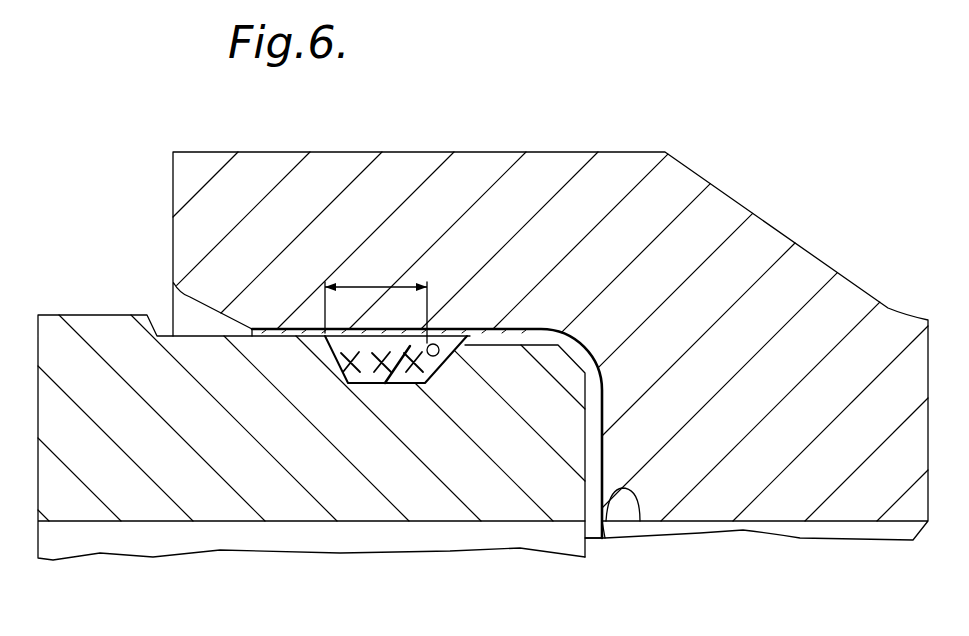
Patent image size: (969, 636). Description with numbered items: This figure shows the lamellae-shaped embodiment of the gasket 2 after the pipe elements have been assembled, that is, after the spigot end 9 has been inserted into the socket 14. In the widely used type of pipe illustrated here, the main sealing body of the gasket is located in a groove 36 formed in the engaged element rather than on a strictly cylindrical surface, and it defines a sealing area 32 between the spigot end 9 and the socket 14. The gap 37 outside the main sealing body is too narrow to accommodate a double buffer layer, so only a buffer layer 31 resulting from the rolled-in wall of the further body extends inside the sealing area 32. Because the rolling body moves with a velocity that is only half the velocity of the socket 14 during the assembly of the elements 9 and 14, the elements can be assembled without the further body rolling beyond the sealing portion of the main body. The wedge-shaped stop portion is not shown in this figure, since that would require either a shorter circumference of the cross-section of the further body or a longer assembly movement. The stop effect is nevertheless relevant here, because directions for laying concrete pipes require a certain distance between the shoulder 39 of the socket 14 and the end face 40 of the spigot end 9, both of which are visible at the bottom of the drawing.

The gasket 2 is at (337, 372).
The spigot end 9 is at (164, 512).
The socket 14 is at (570, 162).
The buffer layer 31 is at (485, 328).
The sealing area 32 is at (376, 297).
The groove 36 is at (381, 384).
The gap 37 is at (293, 338).
The shoulder 39 is at (636, 522).
The end face 40 is at (594, 522).